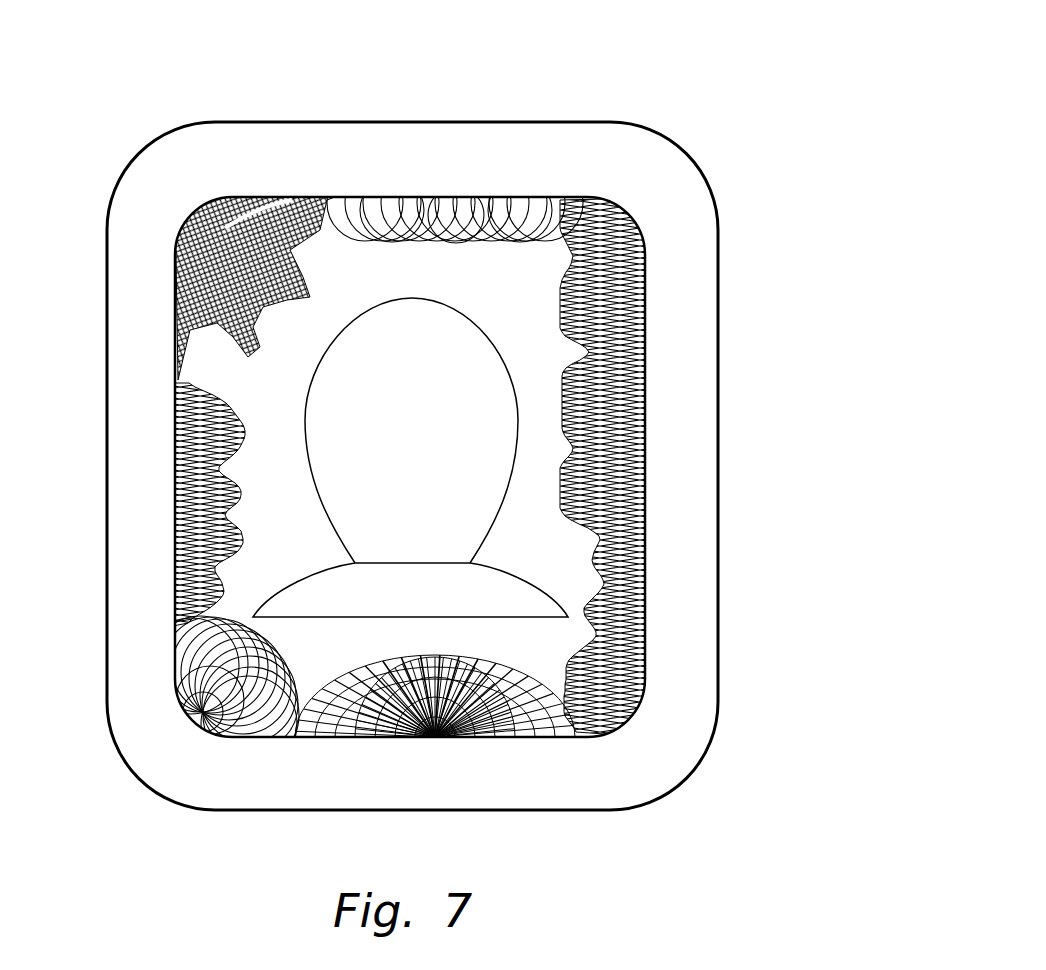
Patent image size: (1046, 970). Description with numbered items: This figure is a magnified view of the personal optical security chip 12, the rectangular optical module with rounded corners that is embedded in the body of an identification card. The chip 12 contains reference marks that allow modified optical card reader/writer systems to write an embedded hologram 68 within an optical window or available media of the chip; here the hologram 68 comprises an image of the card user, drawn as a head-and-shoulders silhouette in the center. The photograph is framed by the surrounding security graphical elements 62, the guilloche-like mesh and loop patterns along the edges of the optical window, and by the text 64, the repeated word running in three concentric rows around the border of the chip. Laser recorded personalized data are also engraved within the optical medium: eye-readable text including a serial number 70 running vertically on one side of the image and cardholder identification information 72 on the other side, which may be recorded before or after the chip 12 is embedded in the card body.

The personal optical security chip 12 is at (620, 66).
The security graphical elements 62 is at (645, 312).
The text 64 is at (442, 150).
The embedded hologram 68 is at (380, 298).
The serial number 70 is at (542, 547).
The cardholder identification information 72 is at (262, 547).